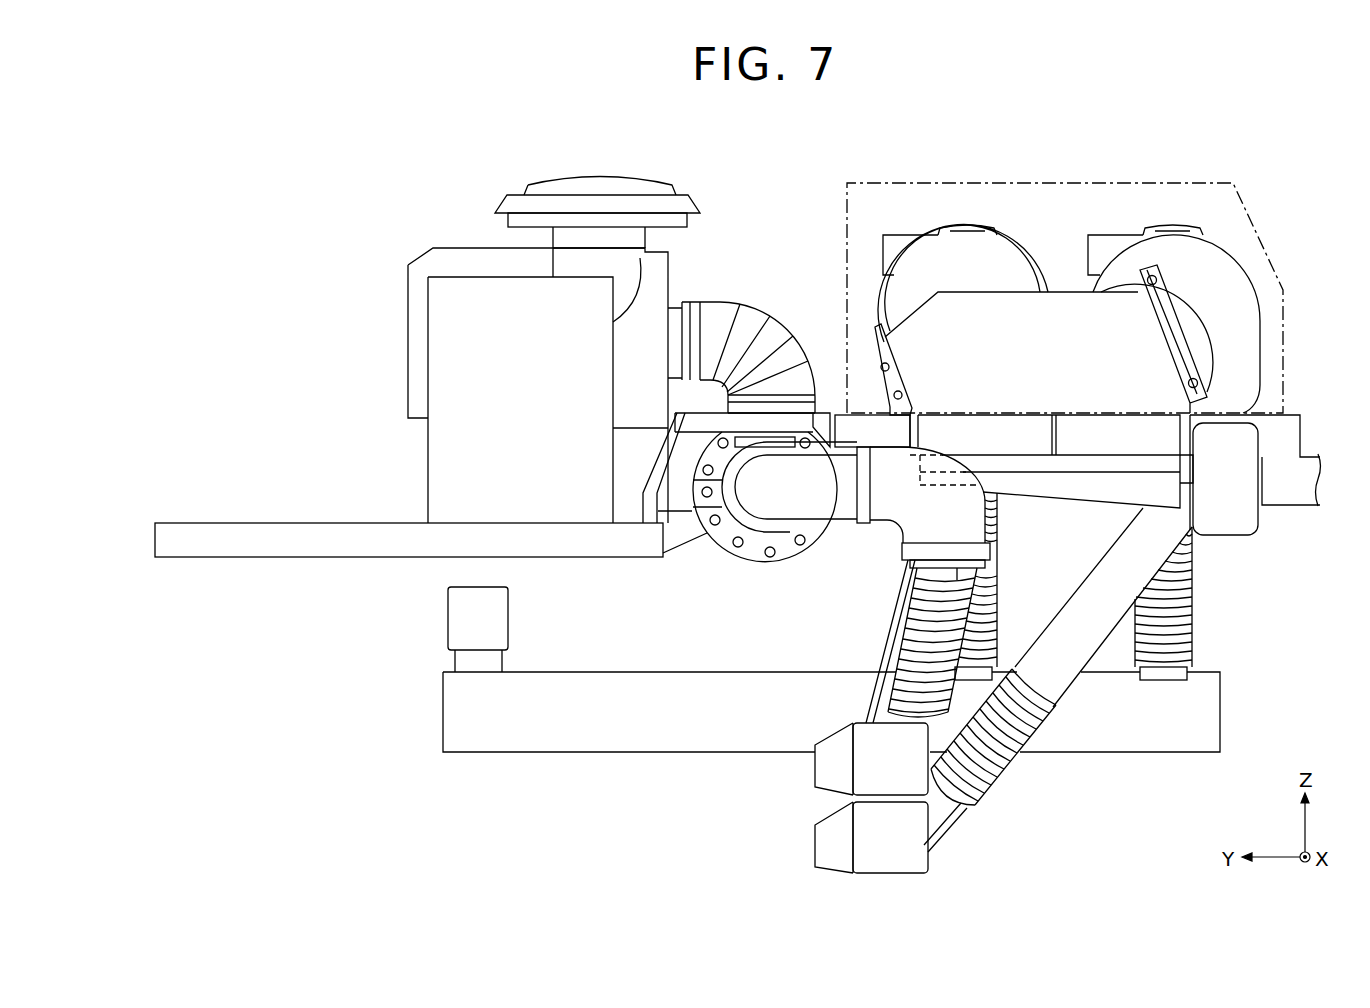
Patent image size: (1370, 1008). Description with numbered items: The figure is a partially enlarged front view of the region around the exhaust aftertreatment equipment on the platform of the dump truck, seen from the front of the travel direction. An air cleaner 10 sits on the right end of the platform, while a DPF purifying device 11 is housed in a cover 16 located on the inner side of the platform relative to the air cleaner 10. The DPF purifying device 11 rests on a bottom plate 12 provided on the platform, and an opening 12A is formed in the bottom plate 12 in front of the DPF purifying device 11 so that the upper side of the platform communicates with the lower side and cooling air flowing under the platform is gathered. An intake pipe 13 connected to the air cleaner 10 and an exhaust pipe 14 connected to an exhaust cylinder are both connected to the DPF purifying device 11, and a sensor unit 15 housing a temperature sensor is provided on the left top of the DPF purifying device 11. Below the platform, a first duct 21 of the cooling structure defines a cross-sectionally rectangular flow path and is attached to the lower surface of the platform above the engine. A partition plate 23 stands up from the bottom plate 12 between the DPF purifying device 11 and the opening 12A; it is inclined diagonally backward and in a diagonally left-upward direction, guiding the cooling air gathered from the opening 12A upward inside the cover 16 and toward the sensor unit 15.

The air cleaner 10 is at (596, 207).
The DPF purifying device 11 is at (963, 257).
The bottom plate 12 is at (1277, 432).
The opening 12A is at (1083, 440).
The intake pipe 13 is at (908, 647).
The exhaust pipe 14 is at (993, 595).
The sensor unit 15 is at (903, 243).
The cover 16 is at (1045, 181).
The first duct 21 is at (1168, 495).
The partition plate 23 is at (1160, 380).